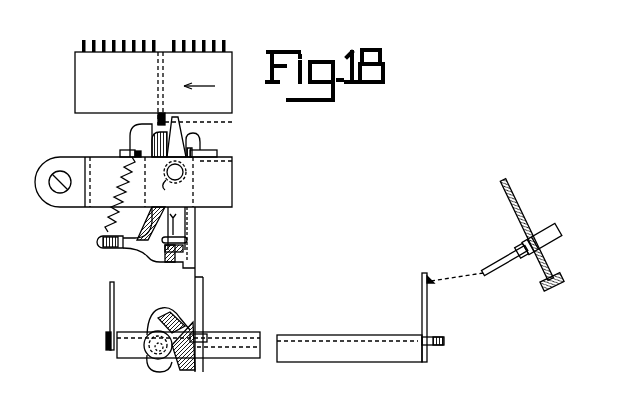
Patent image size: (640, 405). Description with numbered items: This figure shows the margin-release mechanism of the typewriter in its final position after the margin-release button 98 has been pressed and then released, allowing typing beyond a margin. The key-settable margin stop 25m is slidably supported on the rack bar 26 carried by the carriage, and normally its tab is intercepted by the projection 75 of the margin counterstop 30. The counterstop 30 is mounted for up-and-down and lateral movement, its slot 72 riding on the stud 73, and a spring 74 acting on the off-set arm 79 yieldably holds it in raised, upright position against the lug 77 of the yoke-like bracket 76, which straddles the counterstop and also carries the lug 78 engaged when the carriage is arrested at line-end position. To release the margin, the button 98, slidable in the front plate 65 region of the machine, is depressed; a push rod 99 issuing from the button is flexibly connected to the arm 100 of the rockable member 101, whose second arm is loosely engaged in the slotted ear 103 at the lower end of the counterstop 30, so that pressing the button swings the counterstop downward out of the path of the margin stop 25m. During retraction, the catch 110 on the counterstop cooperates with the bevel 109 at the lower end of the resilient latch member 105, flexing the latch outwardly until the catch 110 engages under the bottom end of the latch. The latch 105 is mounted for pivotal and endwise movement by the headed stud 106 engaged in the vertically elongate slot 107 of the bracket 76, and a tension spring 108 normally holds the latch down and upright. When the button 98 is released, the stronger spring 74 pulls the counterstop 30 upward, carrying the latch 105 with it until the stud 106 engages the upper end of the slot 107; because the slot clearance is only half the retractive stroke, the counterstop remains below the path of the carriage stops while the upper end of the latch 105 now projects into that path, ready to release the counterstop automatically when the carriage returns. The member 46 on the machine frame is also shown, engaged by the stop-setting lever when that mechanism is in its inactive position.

The margin stop 25m is at (160, 50).
The rack bar 26 is at (130, 94).
The margin counterstop 30 is at (200, 270).
The member on the machine frame 46 is at (549, 292).
The front plate 65 is at (521, 208).
The slot 72 is at (168, 312).
The stud 73 is at (163, 368).
The spring 74 is at (122, 192).
The projection 75 is at (186, 128).
The yoke-like bracket 76 is at (232, 186).
The lug 77 is at (217, 153).
The lug 78 is at (124, 151).
The off-set arm 79 is at (122, 249).
The margin-release button 98 is at (562, 231).
The push rod 99 is at (497, 262).
The arm 100 is at (428, 300).
The rockable member 101 is at (368, 336).
The slotted ear 103 is at (207, 348).
The resilient latch member 105 is at (182, 142).
The headed stud 106 is at (167, 181).
The vertically elongate slot 107 is at (187, 172).
The tension spring 108 is at (162, 240).
The bevel 109 is at (187, 239).
The catch 110 is at (183, 249).